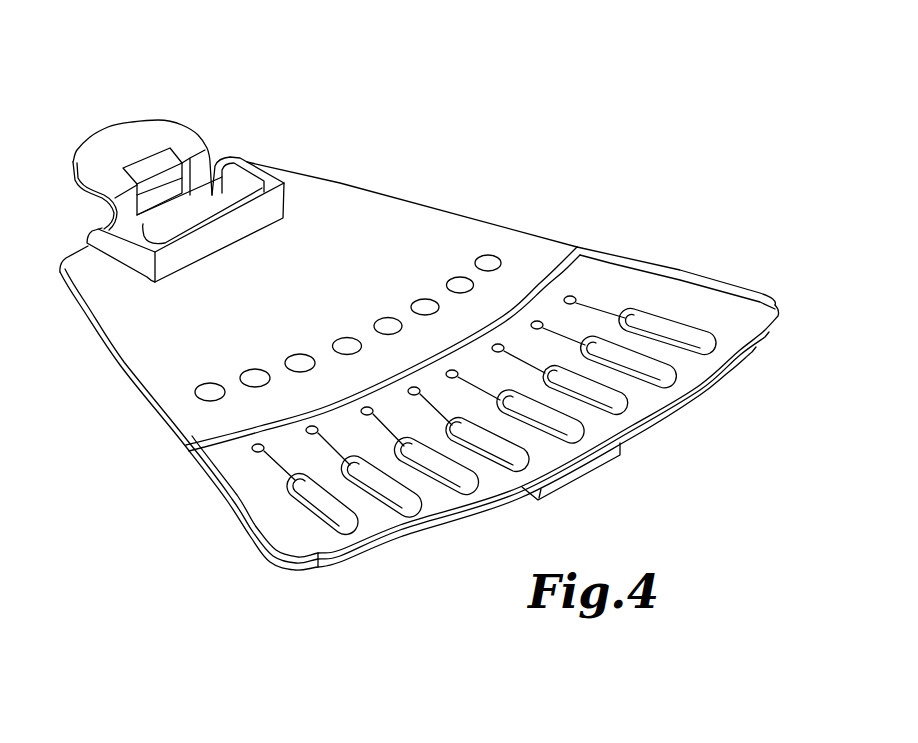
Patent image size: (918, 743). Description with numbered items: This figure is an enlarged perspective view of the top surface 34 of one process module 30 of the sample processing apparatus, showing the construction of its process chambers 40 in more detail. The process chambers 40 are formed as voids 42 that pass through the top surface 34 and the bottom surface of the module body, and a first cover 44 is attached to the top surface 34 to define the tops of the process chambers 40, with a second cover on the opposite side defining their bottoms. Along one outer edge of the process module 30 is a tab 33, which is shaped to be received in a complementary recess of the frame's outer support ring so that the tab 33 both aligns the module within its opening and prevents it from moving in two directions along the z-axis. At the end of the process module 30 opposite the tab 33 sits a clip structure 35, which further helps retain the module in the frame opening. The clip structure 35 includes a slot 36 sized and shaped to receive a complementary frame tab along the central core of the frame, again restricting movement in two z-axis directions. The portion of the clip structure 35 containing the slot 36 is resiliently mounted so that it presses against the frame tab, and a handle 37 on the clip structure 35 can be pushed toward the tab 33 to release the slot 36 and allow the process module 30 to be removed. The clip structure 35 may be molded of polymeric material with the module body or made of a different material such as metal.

The process module 30 is at (547, 167).
The tab 33 is at (573, 481).
The top surface 34 is at (425, 218).
The clip structure 35 is at (149, 110).
The slot 36 is at (162, 177).
The handle 37 is at (93, 150).
The process chambers 40 is at (351, 527).
The voids 42 is at (297, 480).
The first cover 44 is at (730, 285).